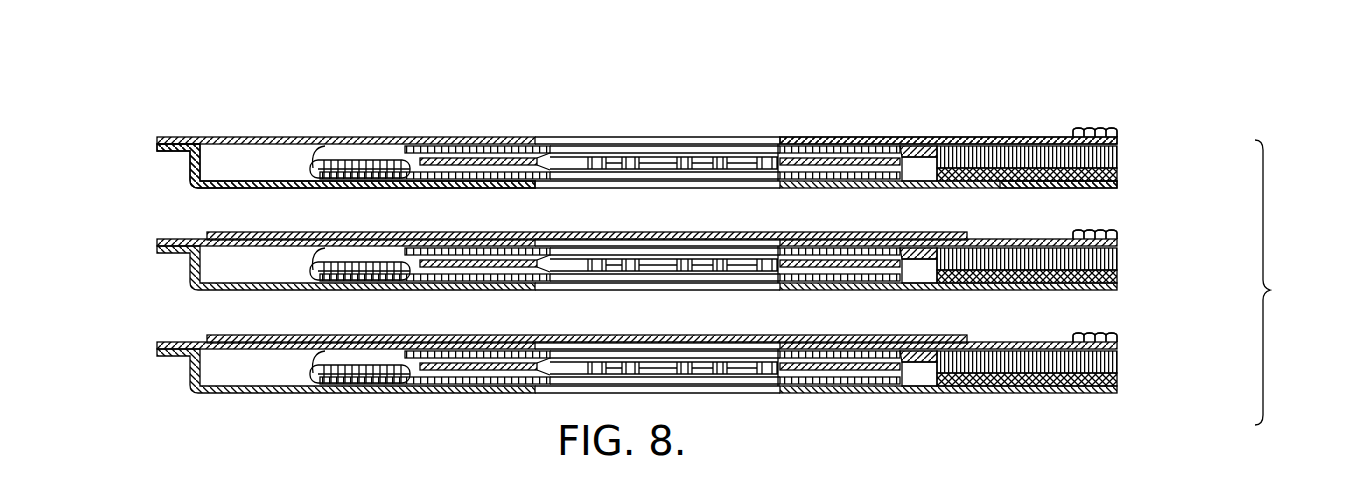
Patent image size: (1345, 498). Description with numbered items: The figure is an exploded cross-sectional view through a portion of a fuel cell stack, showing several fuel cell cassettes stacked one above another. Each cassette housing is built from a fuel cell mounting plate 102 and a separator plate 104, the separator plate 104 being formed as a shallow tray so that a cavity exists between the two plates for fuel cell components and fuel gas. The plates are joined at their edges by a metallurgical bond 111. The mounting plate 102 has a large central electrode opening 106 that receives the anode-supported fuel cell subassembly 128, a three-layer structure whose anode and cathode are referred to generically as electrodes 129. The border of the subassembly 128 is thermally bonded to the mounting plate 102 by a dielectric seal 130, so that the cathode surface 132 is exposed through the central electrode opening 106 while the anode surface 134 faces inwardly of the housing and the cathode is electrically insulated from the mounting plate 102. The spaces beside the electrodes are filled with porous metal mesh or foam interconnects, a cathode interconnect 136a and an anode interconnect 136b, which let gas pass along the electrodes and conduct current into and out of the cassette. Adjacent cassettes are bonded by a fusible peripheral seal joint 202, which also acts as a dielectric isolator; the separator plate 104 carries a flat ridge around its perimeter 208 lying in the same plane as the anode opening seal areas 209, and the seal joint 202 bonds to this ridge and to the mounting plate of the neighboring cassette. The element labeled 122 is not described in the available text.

The fuel cell mounting plate 102 is at (905, 137).
The separator plate 104 is at (848, 188).
The central electrode opening 106 is at (1326, 300).
The metallurgical bond 111 is at (157, 137).
The latch block 122 is at (378, 160).
The fuel cell subassembly 128 is at (948, 100).
The electrodes 129 is at (975, 148).
The dielectric seal 130 is at (1017, 137).
The cathode surface 132 is at (1073, 130).
The anode surface 134 is at (1063, 167).
The cathode interconnect 136a is at (1117, 138).
The anode interconnect 136b is at (1117, 186).
The peripheral seal joint 202 is at (287, 232).
The perimeter of the separator plate 208 is at (201, 188).
The anode opening seal areas 209 is at (478, 188).